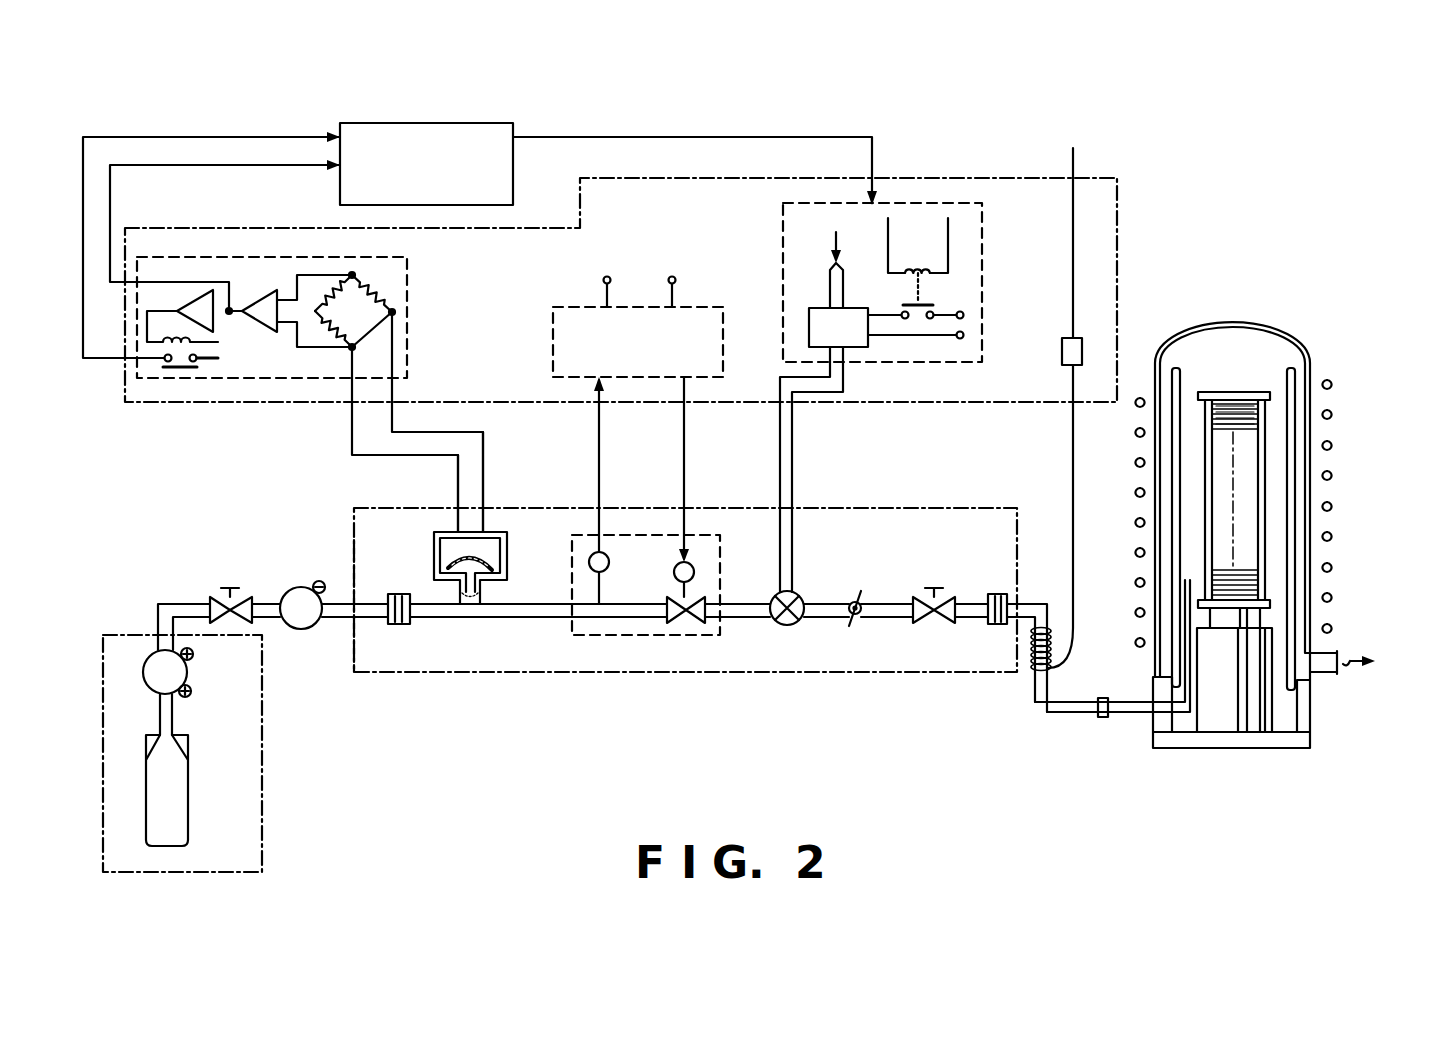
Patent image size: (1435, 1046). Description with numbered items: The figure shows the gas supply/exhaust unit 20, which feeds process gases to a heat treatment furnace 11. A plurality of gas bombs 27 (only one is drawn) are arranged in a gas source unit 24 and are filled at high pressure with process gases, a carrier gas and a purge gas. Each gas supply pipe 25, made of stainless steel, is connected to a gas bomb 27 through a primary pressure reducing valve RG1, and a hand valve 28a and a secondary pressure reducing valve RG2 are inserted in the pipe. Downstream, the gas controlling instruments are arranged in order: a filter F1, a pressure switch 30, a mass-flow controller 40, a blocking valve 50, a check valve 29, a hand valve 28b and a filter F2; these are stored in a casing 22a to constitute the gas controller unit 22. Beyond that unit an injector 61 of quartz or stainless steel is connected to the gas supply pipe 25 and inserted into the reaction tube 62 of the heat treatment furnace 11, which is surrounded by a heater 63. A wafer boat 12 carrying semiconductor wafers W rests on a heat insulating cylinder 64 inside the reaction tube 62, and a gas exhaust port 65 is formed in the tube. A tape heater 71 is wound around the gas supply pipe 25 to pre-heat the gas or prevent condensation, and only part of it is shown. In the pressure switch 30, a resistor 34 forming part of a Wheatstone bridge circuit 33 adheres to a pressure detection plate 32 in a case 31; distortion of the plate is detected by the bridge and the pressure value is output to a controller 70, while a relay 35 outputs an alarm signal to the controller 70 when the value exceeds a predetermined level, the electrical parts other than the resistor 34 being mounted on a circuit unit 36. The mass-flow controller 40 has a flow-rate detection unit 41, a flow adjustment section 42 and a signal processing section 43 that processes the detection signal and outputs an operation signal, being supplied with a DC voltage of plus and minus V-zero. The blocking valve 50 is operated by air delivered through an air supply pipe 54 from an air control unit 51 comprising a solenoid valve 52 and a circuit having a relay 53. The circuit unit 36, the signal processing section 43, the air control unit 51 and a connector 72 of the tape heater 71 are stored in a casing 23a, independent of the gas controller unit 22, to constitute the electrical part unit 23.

The gas supply/exhaust unit 20 is at (932, 93).
The controller 70 is at (456, 123).
The electrical part unit 23 is at (711, 163).
The casing 23a is at (935, 177).
The circuit unit 36 is at (266, 384).
The relay 35 is at (180, 383).
The Wheatstone bridge circuit 33 is at (408, 296).
The signal processing section 43 is at (553, 346).
The air control unit 51 is at (882, 368).
The solenoid valve 52 is at (812, 312).
The relay 53 is at (928, 305).
The connector 72 is at (1062, 349).
The heat treatment furnace 11 is at (1313, 345).
The reaction tube 62 is at (1175, 342).
The heater 63 is at (1140, 392).
The wafer boat 12 is at (1232, 392).
The semiconductor wafers W is at (1222, 434).
The heat insulating cylinder 64 is at (1223, 718).
The gas exhaust port 65 is at (1332, 652).
The injector 61 is at (1128, 718).
The tape heater 71 is at (1030, 669).
The gas supply pipe 25 is at (168, 603).
The gas source unit 24 is at (263, 784).
The gas bomb 27 is at (188, 795).
The primary pressure reducing valve RG1 is at (187, 673).
The hand valve 28a is at (225, 597).
The secondary pressure reducing valve RG2 is at (301, 587).
The filter F1 is at (393, 594).
The pressure switch 30 is at (513, 578).
The case 31 is at (460, 582).
The pressure detection plate 32 is at (448, 566).
The resistor 34 is at (482, 563).
The mass-flow controller 40 is at (593, 642).
The flow-rate detection unit 41 is at (597, 552).
The flow adjustment section 42 is at (690, 598).
The blocking valve 50 is at (792, 594).
The air supply pipe 54 is at (794, 468).
The check valve 29 is at (853, 622).
The hand valve 28b is at (934, 623).
The filter F2 is at (996, 594).
The casing 22a is at (817, 673).
The gas controller unit 22 is at (706, 678).